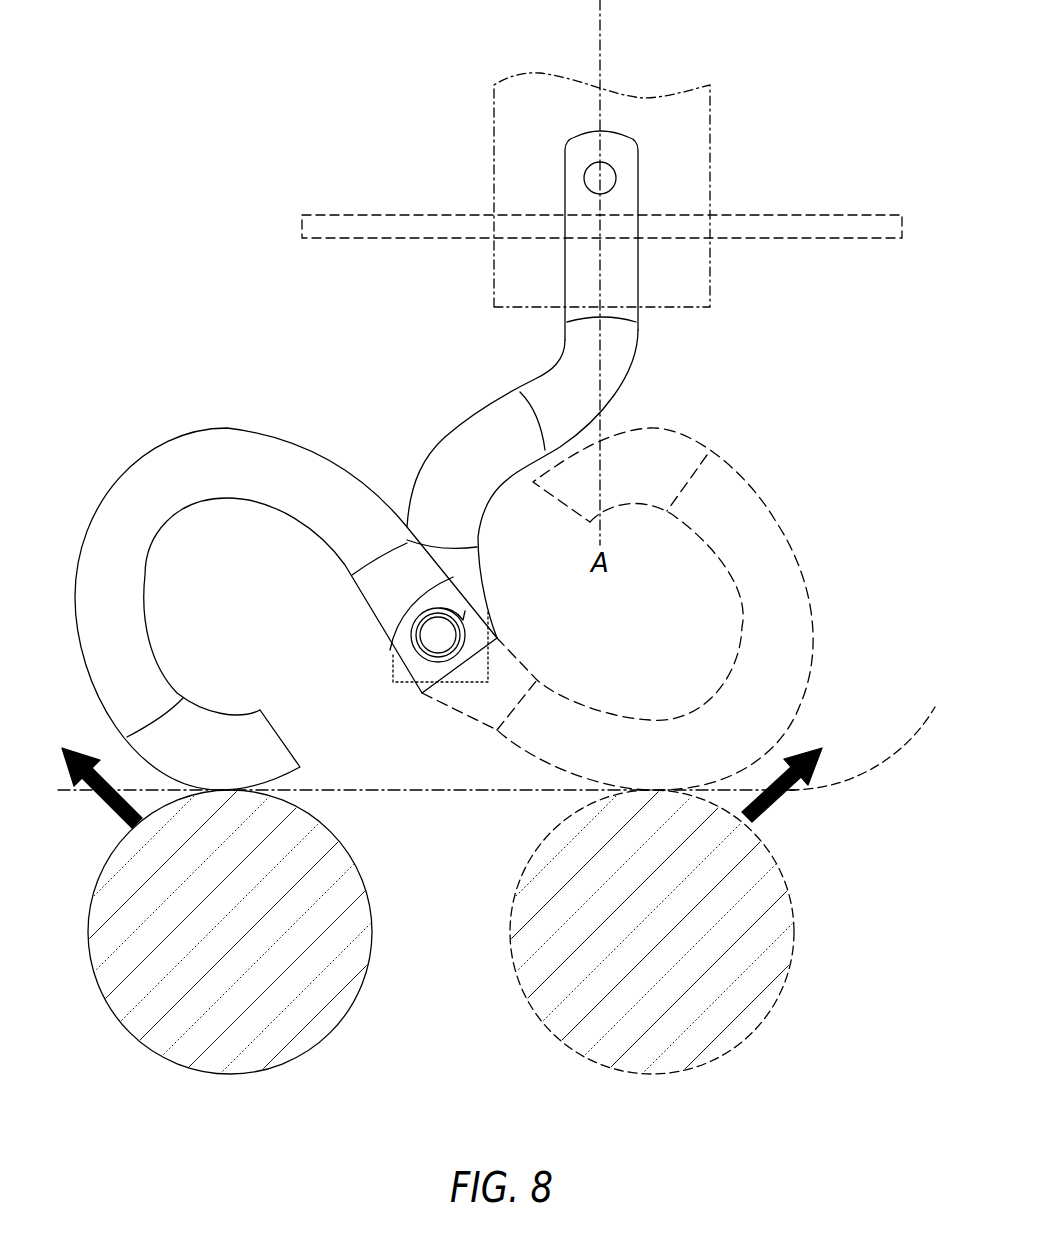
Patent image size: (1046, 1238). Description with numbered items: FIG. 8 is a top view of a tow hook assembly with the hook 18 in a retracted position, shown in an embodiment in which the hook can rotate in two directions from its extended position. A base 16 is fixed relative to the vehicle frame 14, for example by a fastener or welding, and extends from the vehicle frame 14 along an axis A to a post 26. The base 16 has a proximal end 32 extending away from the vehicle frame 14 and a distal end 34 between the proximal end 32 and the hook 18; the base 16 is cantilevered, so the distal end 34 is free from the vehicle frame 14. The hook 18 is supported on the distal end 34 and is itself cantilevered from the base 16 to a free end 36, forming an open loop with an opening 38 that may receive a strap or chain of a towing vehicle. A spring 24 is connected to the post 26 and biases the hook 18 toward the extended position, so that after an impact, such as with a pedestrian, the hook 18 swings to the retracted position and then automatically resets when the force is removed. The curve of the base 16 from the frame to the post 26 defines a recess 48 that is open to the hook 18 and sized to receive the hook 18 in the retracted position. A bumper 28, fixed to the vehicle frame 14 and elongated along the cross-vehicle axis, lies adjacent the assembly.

The vehicle frame 14 is at (710, 127).
The base 16 is at (498, 381).
The hook 18 is at (479, 554).
The spring 24 is at (437, 662).
The post 26 is at (430, 632).
The bumper 28 is at (878, 765).
The proximal end 32 is at (538, 170).
The distal end 34 is at (370, 636).
The free end 36 is at (160, 440).
The opening 38 is at (315, 703).
The recess 48 is at (523, 520).